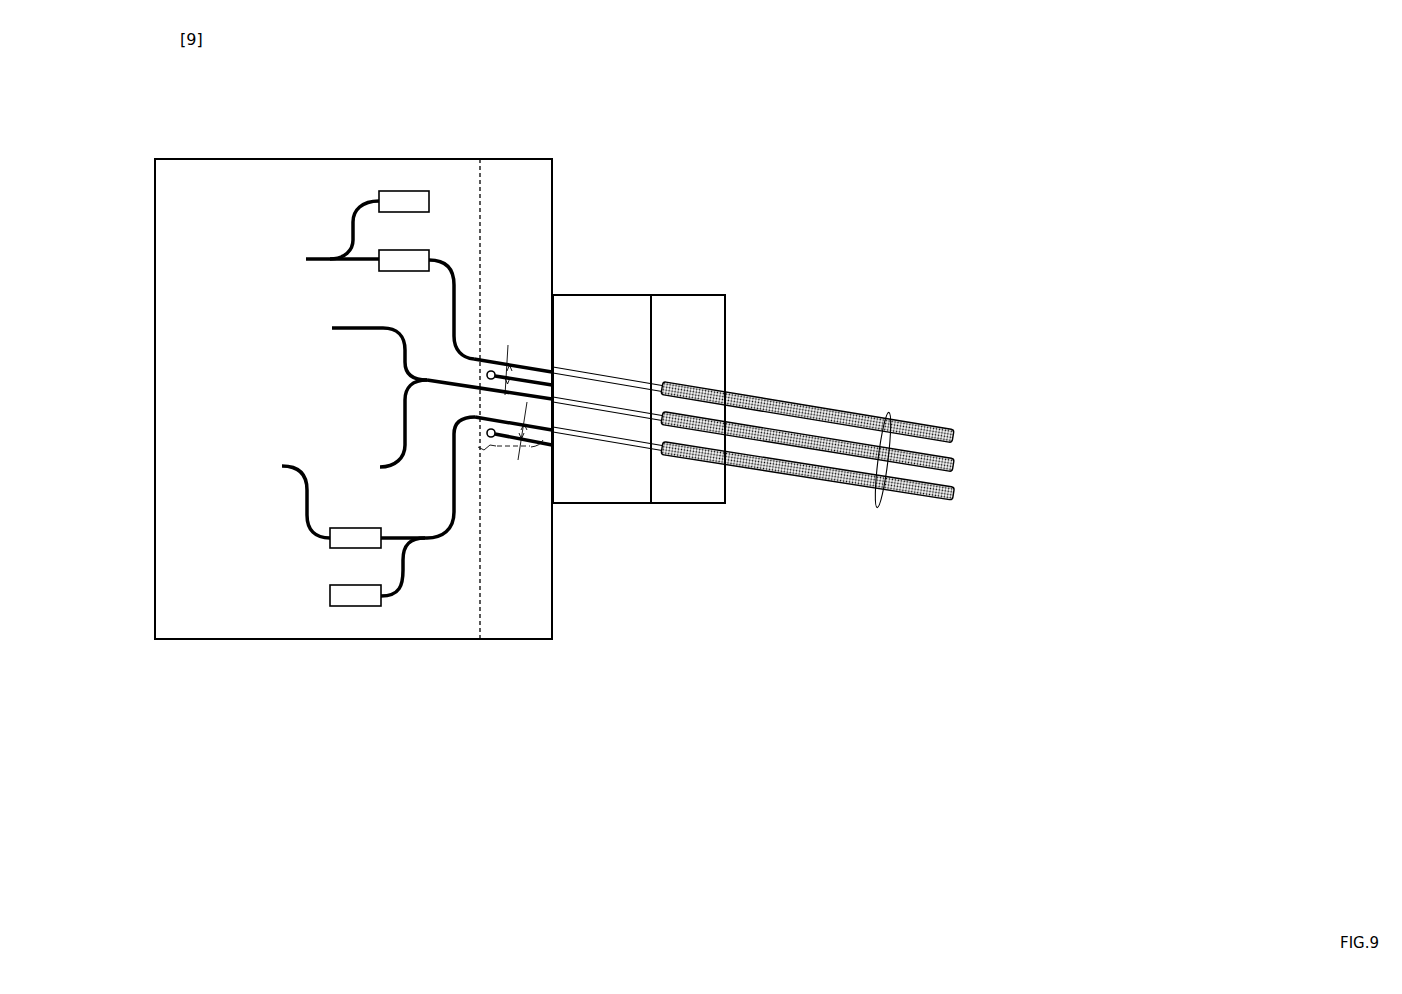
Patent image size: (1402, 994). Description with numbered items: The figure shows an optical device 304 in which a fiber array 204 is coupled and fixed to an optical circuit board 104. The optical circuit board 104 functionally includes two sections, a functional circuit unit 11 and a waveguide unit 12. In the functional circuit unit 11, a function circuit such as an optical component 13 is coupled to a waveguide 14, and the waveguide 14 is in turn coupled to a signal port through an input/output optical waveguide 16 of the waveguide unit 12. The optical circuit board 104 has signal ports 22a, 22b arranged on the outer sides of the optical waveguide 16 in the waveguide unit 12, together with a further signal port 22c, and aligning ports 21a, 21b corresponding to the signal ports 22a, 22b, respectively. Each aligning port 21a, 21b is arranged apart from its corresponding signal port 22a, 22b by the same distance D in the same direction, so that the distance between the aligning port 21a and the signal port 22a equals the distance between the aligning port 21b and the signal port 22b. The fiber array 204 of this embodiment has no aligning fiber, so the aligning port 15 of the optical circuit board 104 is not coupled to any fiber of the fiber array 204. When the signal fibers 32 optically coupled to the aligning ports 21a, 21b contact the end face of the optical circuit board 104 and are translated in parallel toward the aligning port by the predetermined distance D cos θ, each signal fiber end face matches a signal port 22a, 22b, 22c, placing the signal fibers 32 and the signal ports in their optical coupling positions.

The functional circuit unit 11 is at (331, 157).
The waveguide unit 12 is at (523, 157).
The optical component 13 is at (402, 191).
The waveguide 14 is at (314, 262).
The aligning port 15 is at (487, 374).
The input/output optical waveguide 16 is at (524, 362).
The aligning port 21a is at (556, 384).
The aligning port 21b is at (555, 445).
The signal port 22a is at (546, 368).
The signal port 22b is at (541, 444).
The signal port 22c is at (554, 401).
The signal fiber 32 is at (890, 412).
The optical circuit board 104 is at (425, 154).
The fiber array 204 is at (645, 285).
The optical device 304 is at (627, 120).